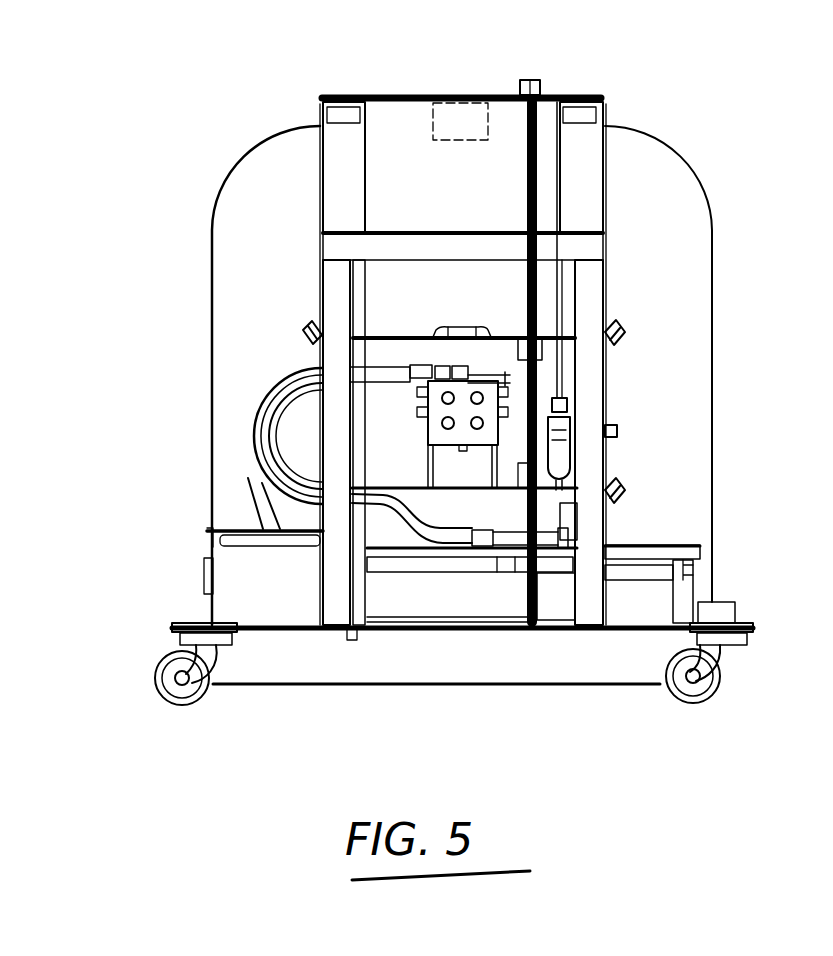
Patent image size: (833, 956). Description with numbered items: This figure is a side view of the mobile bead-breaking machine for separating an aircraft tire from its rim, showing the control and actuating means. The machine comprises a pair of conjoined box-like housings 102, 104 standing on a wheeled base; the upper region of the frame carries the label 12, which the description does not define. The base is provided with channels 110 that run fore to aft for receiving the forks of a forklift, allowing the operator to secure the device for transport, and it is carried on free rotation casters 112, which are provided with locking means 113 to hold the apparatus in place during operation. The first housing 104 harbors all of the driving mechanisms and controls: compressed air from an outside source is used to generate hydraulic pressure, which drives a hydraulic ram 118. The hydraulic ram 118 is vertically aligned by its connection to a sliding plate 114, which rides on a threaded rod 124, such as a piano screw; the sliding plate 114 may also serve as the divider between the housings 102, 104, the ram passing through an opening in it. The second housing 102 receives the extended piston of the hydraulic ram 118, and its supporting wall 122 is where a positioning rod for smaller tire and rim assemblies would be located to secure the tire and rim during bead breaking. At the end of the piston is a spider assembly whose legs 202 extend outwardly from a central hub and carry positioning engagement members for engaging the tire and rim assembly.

The upper housing 12 is at (453, 369).
The second housing 102 is at (335, 168).
The first housing 104 is at (590, 515).
The channels 110 is at (455, 673).
The free rotation casters 112 is at (160, 678).
The locking means 113 is at (165, 655).
The sliding plate 114 is at (477, 358).
The hydraulic ram 118 is at (437, 426).
The supporting wall 122 is at (283, 271).
The threaded rod 124 is at (543, 84).
The legs 202 is at (310, 347).